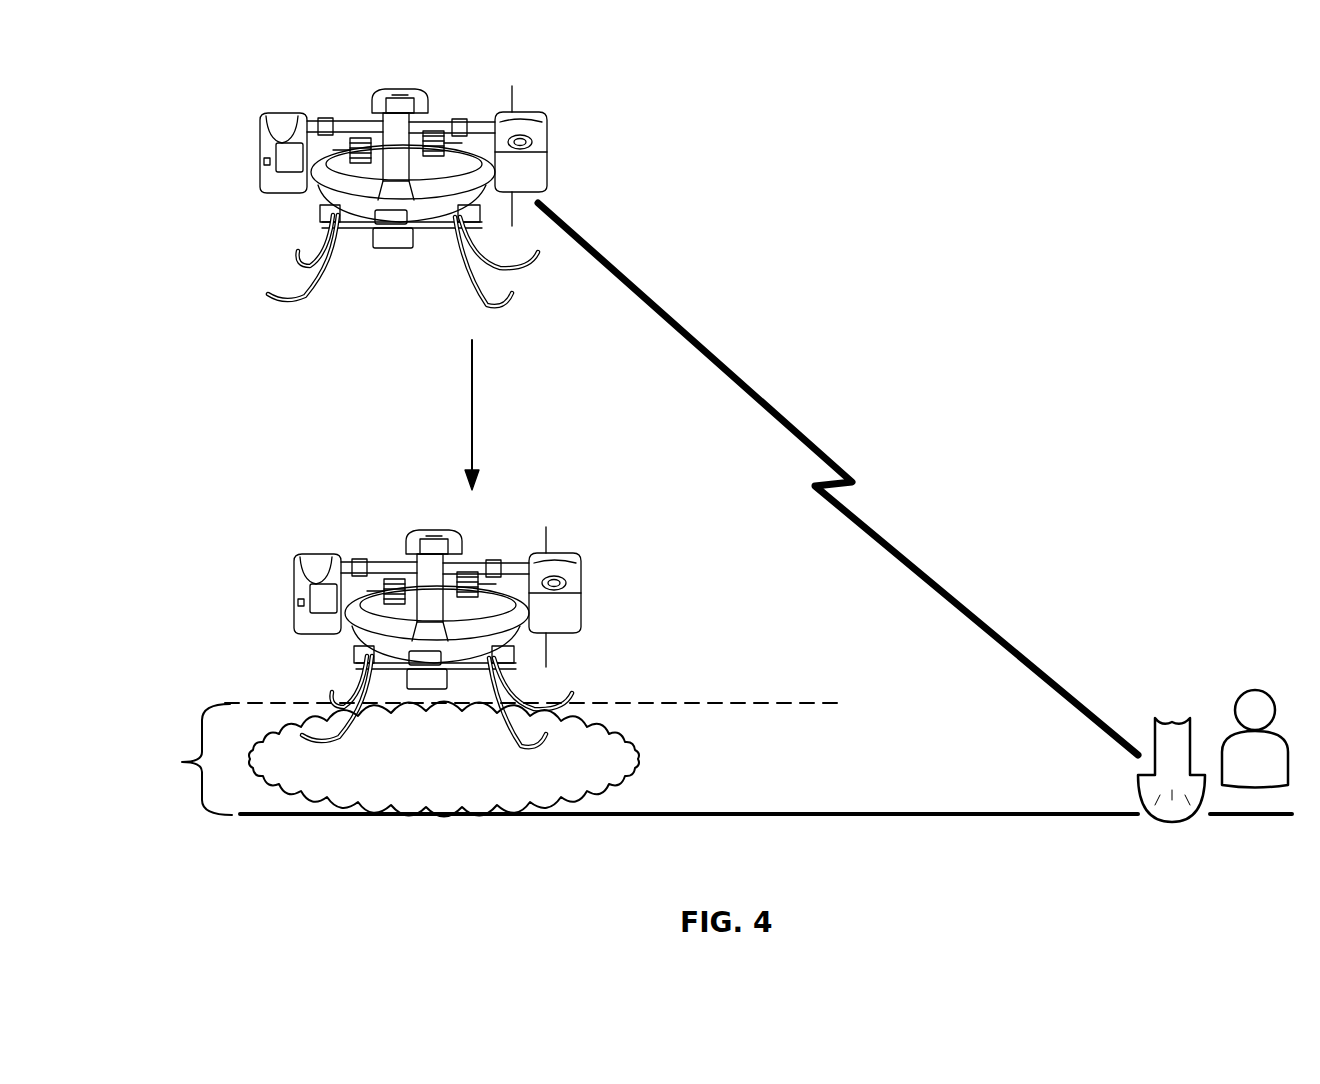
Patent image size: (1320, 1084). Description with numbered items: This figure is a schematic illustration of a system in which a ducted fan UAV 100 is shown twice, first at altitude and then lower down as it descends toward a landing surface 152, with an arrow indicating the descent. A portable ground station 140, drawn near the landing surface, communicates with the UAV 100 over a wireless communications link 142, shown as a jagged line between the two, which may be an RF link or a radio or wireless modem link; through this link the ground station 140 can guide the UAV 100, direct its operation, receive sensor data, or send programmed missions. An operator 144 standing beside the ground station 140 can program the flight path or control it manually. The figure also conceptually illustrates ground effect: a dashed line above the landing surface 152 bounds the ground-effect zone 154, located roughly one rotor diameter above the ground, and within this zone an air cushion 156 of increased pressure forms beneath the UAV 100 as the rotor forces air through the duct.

The UAV 100 is at (252, 149).
The ground station 140 is at (1123, 787).
The wireless communications link 142 is at (803, 504).
The operator 144 is at (1244, 680).
The landing surface 152 is at (713, 812).
The ground-effect zone 154 is at (477, 759).
The air cushion 156 is at (357, 775).